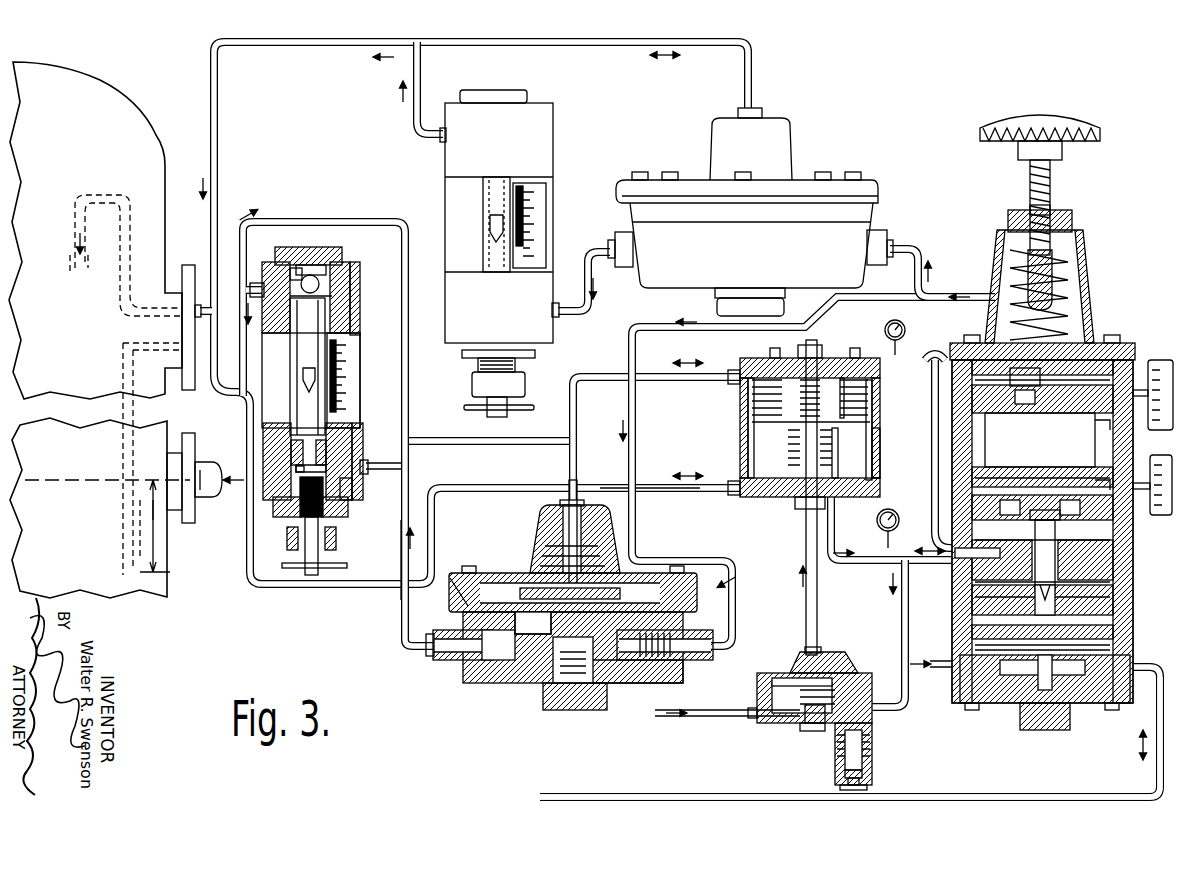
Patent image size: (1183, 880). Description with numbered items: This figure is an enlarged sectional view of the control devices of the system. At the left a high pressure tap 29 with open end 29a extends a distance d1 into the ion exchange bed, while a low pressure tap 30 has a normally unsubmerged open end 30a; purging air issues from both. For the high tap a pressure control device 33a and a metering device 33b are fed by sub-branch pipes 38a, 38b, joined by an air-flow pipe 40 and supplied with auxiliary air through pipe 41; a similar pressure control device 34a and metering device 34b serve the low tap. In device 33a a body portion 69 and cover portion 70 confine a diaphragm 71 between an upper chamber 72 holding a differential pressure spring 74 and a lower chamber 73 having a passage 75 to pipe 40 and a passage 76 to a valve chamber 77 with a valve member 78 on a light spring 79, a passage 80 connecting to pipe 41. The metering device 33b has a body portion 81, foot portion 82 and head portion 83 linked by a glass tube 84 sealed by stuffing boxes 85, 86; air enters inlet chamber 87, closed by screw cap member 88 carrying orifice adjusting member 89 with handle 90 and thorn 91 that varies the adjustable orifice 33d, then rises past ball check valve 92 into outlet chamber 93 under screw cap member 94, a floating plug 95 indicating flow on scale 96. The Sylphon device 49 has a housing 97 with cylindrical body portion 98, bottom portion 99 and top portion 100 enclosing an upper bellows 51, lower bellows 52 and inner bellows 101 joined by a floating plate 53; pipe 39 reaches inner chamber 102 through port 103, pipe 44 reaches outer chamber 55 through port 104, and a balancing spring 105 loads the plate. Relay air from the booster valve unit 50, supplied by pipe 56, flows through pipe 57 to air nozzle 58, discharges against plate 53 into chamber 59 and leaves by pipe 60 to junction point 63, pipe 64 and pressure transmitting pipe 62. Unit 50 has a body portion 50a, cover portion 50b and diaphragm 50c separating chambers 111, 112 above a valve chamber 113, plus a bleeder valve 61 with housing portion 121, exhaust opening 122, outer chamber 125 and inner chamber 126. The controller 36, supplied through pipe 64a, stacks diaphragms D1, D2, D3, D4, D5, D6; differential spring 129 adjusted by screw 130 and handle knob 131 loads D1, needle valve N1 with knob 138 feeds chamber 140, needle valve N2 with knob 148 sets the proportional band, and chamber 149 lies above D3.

The high pressure tap 29 is at (122, 346).
The open end of high pressure tap 29a is at (124, 574).
The low pressure tap 30 is at (128, 260).
The open end of low pressure tap 30a is at (76, 270).
The submergence distance d1 is at (164, 523).
The pressure control device 33a is at (534, 550).
The metering device 33b is at (358, 284).
The adjustable orifice 33d is at (348, 450).
The pressure control device 34a is at (886, 180).
The metering device 34b is at (552, 132).
The controller 36 is at (1093, 283).
The sub-branch pipe 38a is at (410, 412).
The sub-branch pipe 38b is at (258, 300).
The branch pipe 39 is at (583, 376).
The air-flow pipe 40 is at (398, 616).
The air supply pipe 41 is at (740, 588).
The branch pipe 44 is at (692, 492).
The Sylphon device 49 is at (874, 362).
The pressure relay device 50 is at (776, 736).
The body portion 50a is at (762, 730).
The top or cover portion 50b is at (835, 665).
The pressure responsive diaphragm 50c is at (795, 678).
The upper Sylphon 51 is at (870, 385).
The lower Sylphon 52 is at (836, 458).
The floating plate 53 is at (760, 424).
The outer annular pressure chamber 55 is at (752, 440).
The air supply pipe 56 is at (724, 712).
The air passage pipe 57 is at (818, 598).
The air nozzle 58 is at (830, 440).
The interior of lower Sylphon 59 is at (795, 450).
The air passage pipe 60 is at (830, 540).
The automatic bleeder valve 61 is at (872, 740).
The pressure transmitting pipe 62 is at (912, 566).
The junction point 63 is at (918, 518).
The pipe 64 is at (840, 600).
The supply pipe 64a is at (940, 664).
The body portion 69 is at (690, 680).
The top or cover portion 70 is at (530, 560).
The diaphragm 71 is at (470, 610).
The upper pressure chamber 72 is at (520, 580).
The lower pressure chamber 73 is at (485, 680).
The differential pressure spring 74 is at (612, 565).
The passage 75 is at (470, 668).
The passage 76 is at (530, 668).
The valve chamber 77 is at (568, 660).
The valve member 78 is at (560, 648).
The light spring 79 is at (575, 700).
The passage 80 is at (612, 668).
The body portion 81 is at (358, 356).
The foot portion 82 is at (362, 488).
The head portion 83 is at (356, 320).
The glass tube 84 is at (294, 344).
The upper stuffing box 85 is at (258, 300).
The lower stuffing box 86 is at (296, 465).
The inlet chamber 87 is at (330, 515).
The screw cap member 88 is at (286, 515).
The orifice adjusting member 89 is at (311, 580).
The handle 90 is at (292, 572).
The thorn 91 is at (366, 462).
The ball check valve 92 is at (326, 258).
The outlet chamber 93 is at (298, 268).
The screw cap member 94 is at (311, 272).
The floating plug 95 is at (302, 393).
The scale 96 is at (356, 382).
The housing 97 is at (875, 410).
The cylindrical body portion 98 is at (878, 452).
The bottom portion 99 is at (870, 485).
The top portion 100 is at (848, 358).
The inner bellows 101 is at (848, 368).
The annular inner pressure chamber 102 is at (765, 396).
The port 103 is at (765, 366).
The port 104 is at (762, 497).
The balancing spring 105 is at (802, 368).
The upper pressure chamber 111 is at (822, 655).
The lower pressure chamber 112 is at (848, 674).
The valve chamber 113 is at (805, 728).
The housing portion 121 is at (872, 760).
The exhaust opening 122 is at (845, 786).
The outer pressure chamber 125 is at (845, 760).
The inner pressure chamber 126 is at (872, 722).
The differential spring 129 is at (1013, 282).
The adjusting screw 130 is at (1052, 190).
The handle knob 131 is at (1072, 113).
The graduated hand knob 138 is at (1158, 358).
The pressure chamber 140 is at (1040, 440).
The graduated hand knob 148 is at (1160, 516).
The pressure chamber 149 is at (1052, 528).
The first diaphragm D1 is at (1085, 350).
The second diaphragm D2 is at (1022, 478).
The third diaphragm D3 is at (1000, 538).
The fourth diaphragm D4 is at (1115, 572).
The fifth diaphragm D5 is at (1115, 596).
The sixth diaphragm D6 is at (1118, 650).
The needle valve N1 is at (1093, 433).
The proportional band adjustment needle valve N2 is at (1098, 488).